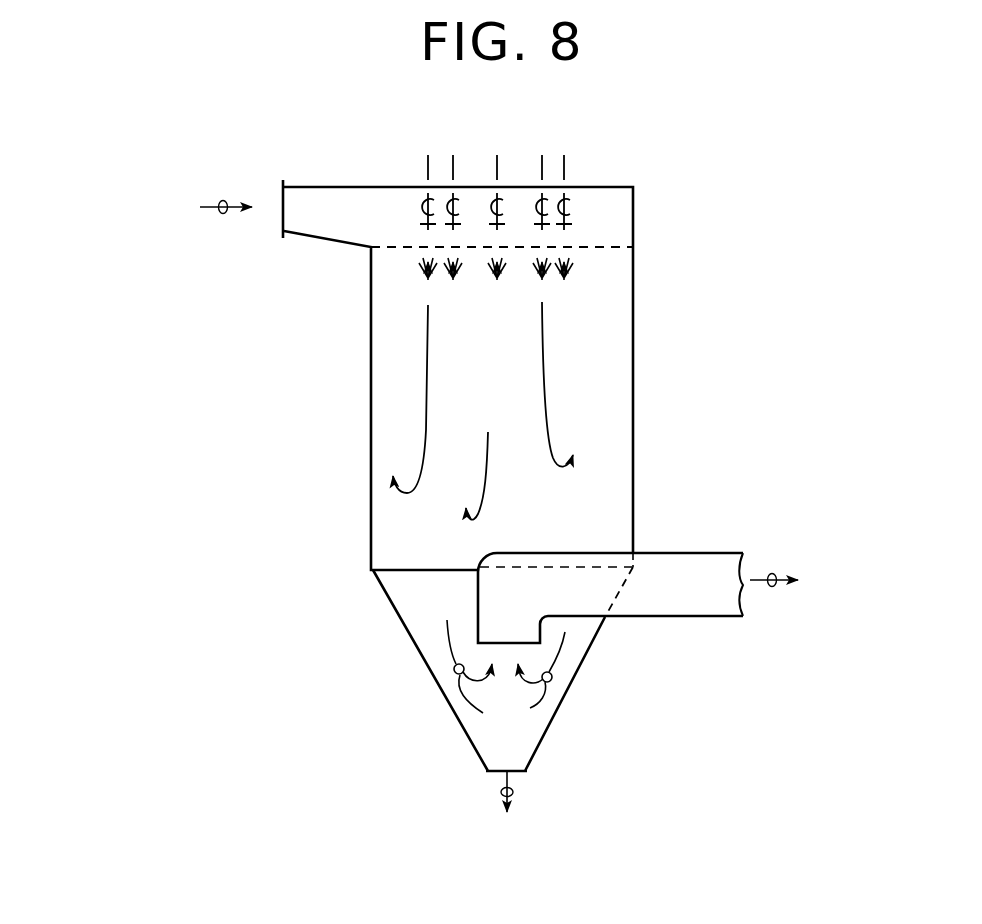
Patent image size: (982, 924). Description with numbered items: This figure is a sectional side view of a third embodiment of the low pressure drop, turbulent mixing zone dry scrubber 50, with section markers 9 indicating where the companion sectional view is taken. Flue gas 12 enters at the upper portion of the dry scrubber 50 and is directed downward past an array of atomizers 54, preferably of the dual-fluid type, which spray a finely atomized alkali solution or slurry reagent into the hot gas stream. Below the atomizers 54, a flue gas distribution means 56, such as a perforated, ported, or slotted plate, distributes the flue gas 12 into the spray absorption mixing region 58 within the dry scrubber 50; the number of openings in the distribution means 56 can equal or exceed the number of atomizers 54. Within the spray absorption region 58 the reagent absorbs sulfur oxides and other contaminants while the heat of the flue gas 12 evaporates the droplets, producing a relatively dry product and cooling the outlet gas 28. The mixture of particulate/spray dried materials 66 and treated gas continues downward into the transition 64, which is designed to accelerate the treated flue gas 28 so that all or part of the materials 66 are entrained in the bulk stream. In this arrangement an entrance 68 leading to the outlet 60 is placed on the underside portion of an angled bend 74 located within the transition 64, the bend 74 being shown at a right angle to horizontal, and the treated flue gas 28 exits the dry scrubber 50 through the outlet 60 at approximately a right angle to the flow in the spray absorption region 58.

The section line 9- 9 is at (185, 135).
The flue gas 12 is at (224, 214).
The treated flue gas 28 is at (772, 573).
The dry scrubber 50 is at (663, 386).
The atomizers 54 is at (497, 163).
The flue gas distribution means 56 is at (590, 248).
The spray absorption mixing region 58 is at (462, 372).
The outlet 60 is at (695, 598).
The transition 64 is at (422, 633).
The particulate/spray dried materials 66 is at (513, 790).
The entrance 68 is at (511, 638).
The angled bend 74 is at (486, 588).